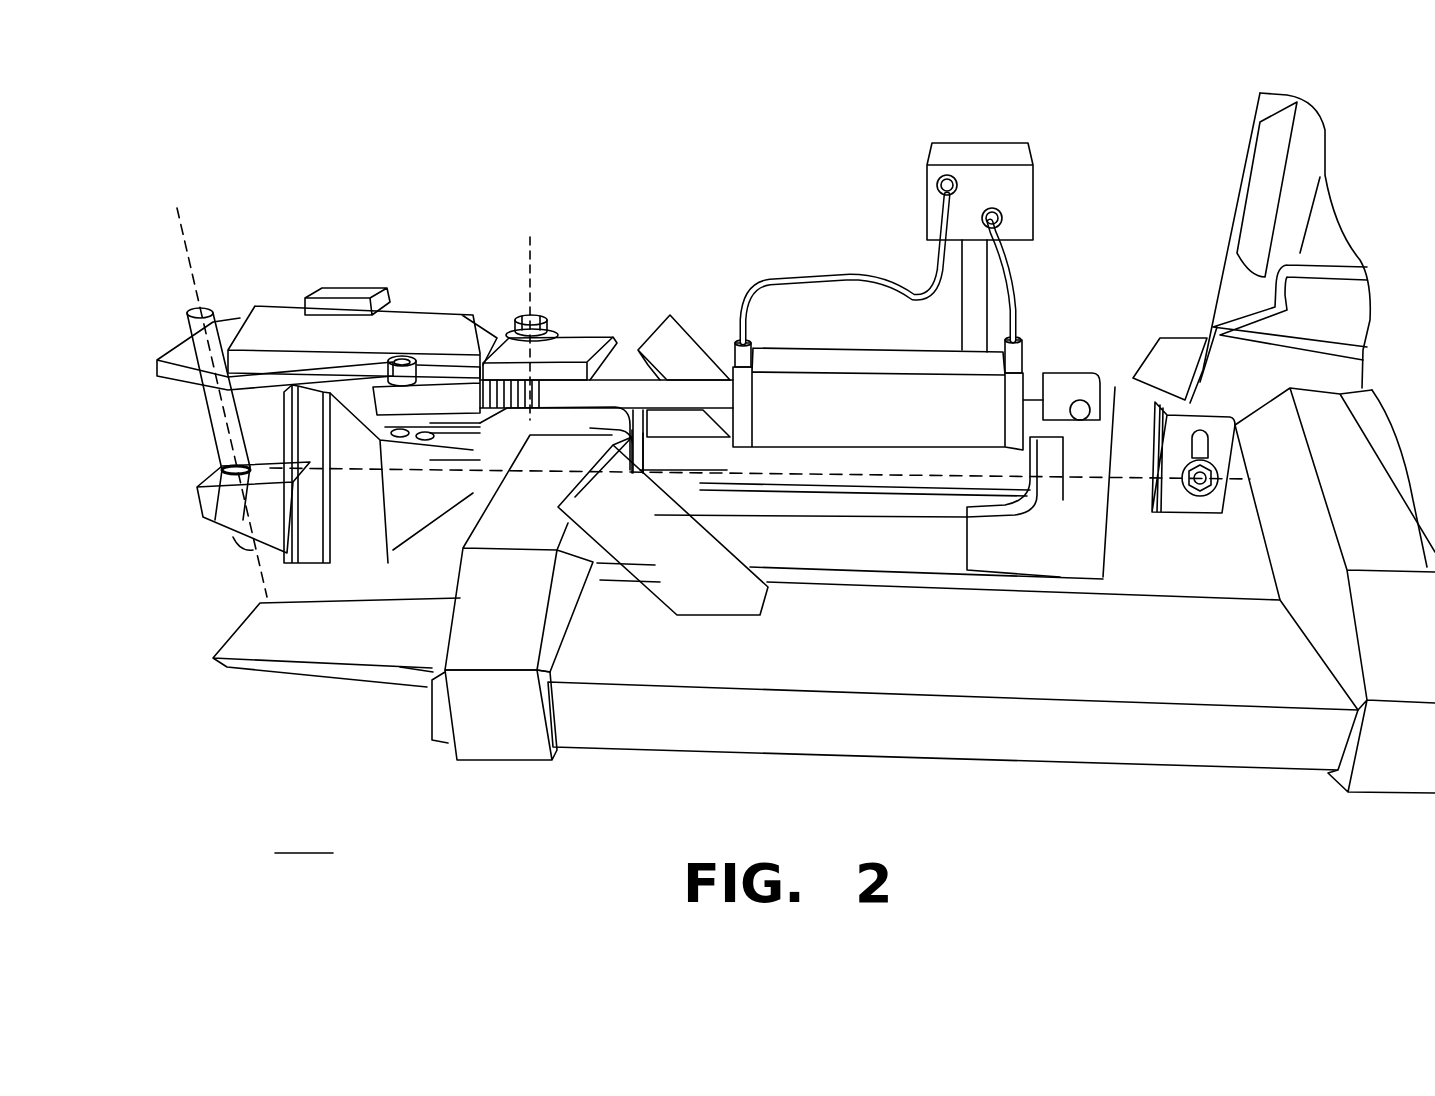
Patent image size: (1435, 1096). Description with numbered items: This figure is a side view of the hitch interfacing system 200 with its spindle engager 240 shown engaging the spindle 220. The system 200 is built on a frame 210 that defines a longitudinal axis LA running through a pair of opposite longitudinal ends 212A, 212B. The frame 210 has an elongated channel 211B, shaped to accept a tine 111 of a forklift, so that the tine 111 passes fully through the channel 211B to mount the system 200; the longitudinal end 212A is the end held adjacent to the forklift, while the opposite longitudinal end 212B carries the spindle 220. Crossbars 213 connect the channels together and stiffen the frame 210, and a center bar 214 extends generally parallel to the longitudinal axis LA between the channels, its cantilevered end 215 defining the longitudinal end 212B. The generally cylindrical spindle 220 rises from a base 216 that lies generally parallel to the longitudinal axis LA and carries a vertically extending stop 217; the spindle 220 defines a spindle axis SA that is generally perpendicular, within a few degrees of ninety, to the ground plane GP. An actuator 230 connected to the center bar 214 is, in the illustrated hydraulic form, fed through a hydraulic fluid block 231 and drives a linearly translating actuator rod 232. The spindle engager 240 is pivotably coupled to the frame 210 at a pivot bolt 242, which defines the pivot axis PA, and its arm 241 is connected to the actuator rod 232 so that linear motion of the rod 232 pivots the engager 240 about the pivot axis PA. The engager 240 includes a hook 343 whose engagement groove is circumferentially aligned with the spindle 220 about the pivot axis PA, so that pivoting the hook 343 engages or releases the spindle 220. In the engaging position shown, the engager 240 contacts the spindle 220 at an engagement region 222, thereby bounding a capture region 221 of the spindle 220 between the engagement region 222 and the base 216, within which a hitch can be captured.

The tine 111 is at (262, 667).
The hitch interfacing system 200 is at (570, 190).
The frame 210 is at (1147, 753).
The channel 211B is at (432, 714).
The longitudinal end 212A is at (1367, 457).
The longitudinal end 212B is at (207, 520).
The crossbar 213 is at (498, 562).
The center bar 214 is at (803, 543).
The cantilevered end 215 is at (406, 506).
The base 216 is at (212, 508).
The stop 217 is at (323, 427).
The spindle 220 is at (218, 462).
The capture region 221 is at (242, 412).
The engagement region 222 is at (222, 330).
The actuator 230 is at (790, 363).
The hydraulic fluid block 231 is at (995, 155).
The actuator rod 232 is at (673, 397).
The spindle engager 240 is at (440, 312).
The arm 241 is at (452, 372).
The pivot bolt 242 is at (560, 350).
The hook 343 is at (182, 386).
The spindle axis SA is at (188, 247).
The pivot axis PA is at (531, 258).
The longitudinal axis LA is at (1053, 473).
The ground plane GP is at (304, 837).